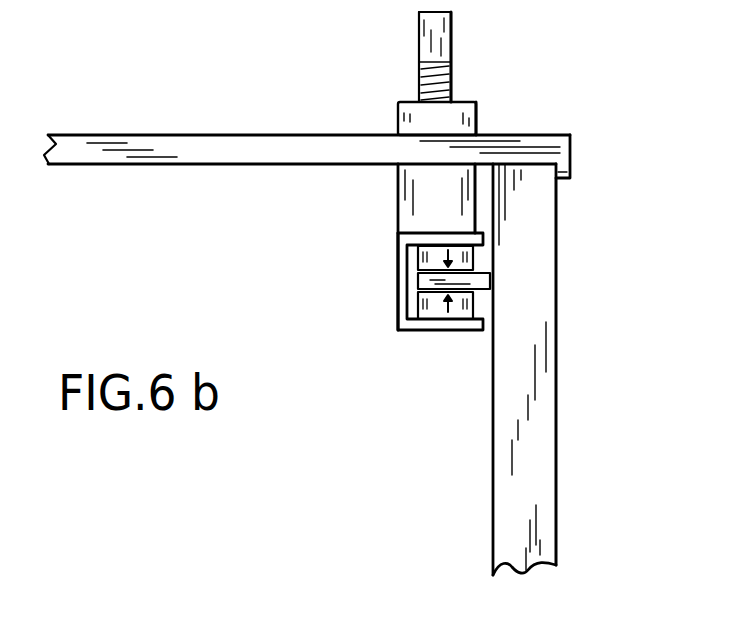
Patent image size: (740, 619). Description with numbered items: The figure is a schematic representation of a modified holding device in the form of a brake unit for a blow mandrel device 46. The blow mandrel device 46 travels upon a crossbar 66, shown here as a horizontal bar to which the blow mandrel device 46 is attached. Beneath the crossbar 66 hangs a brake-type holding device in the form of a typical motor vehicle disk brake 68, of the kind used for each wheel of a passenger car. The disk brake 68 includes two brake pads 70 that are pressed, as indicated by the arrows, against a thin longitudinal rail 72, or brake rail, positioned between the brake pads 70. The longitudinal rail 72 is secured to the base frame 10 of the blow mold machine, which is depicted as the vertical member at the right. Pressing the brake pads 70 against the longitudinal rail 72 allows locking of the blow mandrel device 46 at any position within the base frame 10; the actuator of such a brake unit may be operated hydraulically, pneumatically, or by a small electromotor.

The base frame 10 is at (530, 360).
The blow mandrel device 46 is at (405, 115).
The crossbar 66 is at (138, 154).
The disk brake 68 is at (381, 304).
The brake pads 70 is at (420, 258).
The longitudinal rail 72 is at (485, 284).